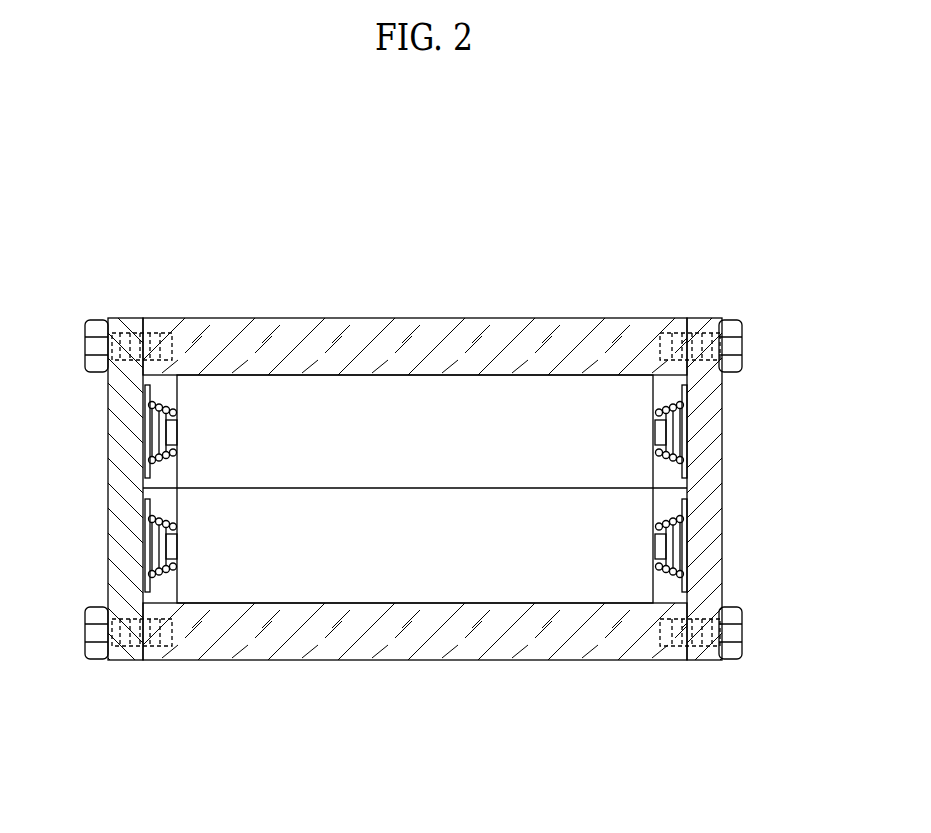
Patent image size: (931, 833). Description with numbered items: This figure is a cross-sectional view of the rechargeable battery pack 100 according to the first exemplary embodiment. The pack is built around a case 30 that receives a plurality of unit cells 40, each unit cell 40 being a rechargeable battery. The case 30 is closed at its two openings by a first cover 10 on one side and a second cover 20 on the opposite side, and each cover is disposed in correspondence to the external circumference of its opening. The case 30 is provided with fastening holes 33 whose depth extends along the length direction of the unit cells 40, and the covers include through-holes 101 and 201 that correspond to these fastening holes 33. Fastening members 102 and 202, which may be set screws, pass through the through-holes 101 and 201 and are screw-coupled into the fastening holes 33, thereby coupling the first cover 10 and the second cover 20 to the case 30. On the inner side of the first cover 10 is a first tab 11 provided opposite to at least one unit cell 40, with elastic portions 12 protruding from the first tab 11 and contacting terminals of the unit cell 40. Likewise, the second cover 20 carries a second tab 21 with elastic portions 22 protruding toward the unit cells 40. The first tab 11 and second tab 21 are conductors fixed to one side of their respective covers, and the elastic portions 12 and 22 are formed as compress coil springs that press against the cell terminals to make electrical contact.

The rechargeable battery pack 100 is at (445, 143).
The first cover 10 is at (125, 497).
The first tab 11 is at (145, 553).
The elastic portions 12 is at (145, 433).
The through-holes 101 is at (122, 321).
The fastening members 102 is at (100, 652).
The second cover 20 is at (710, 525).
The second tab 21 is at (685, 470).
The elastic portions 22 is at (672, 430).
The through-holes 201 is at (703, 650).
The fastening members 202 is at (731, 335).
The case 30 is at (425, 330).
The fastening holes 33 is at (163, 323).
The unit cells 40 is at (383, 465).